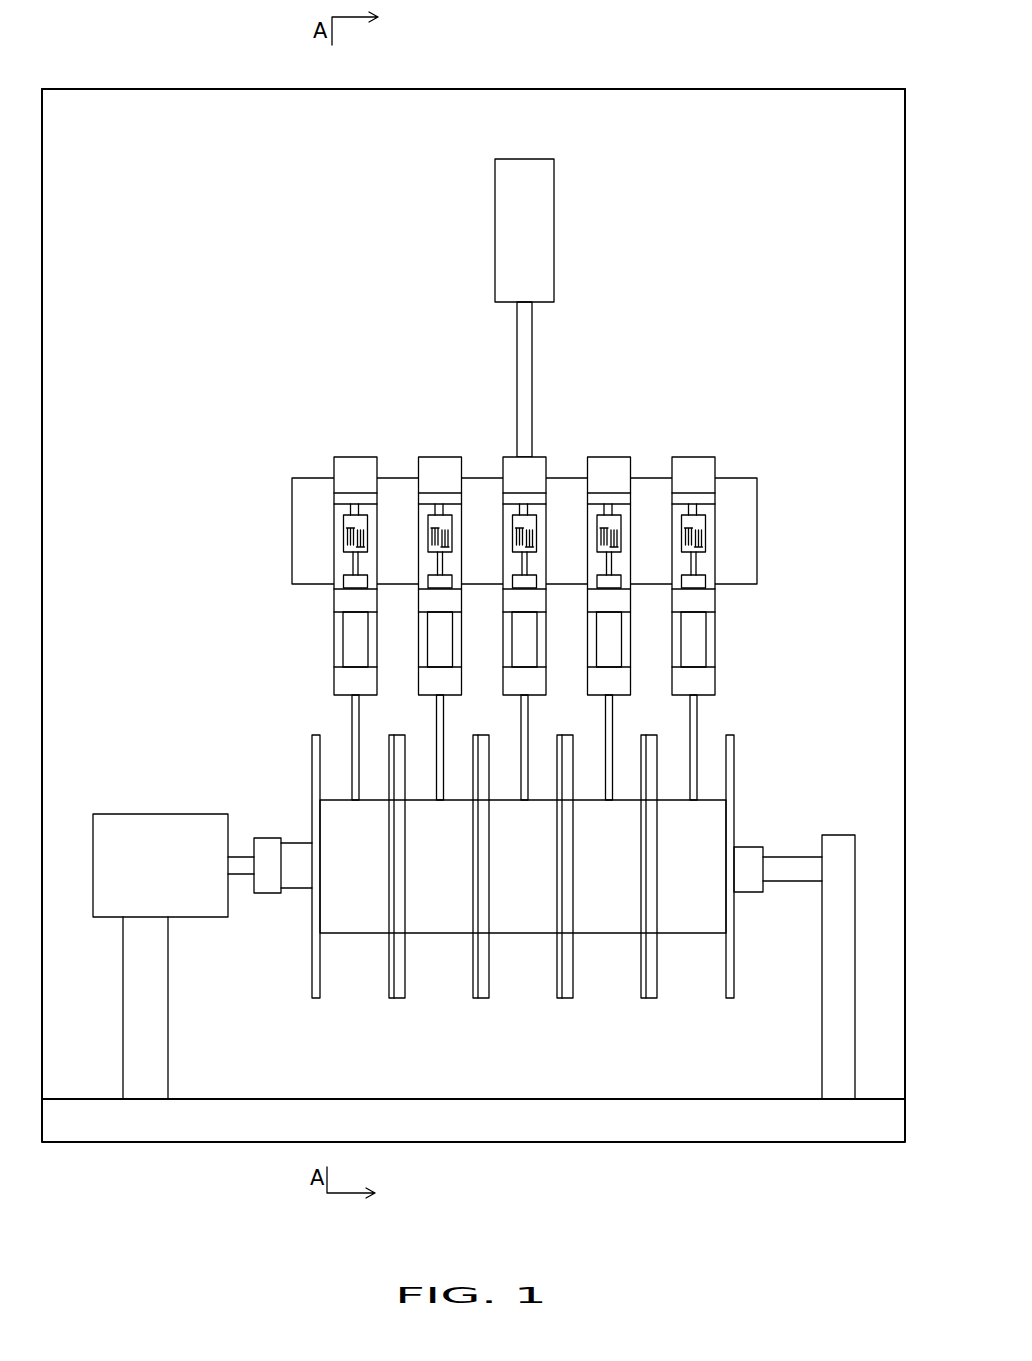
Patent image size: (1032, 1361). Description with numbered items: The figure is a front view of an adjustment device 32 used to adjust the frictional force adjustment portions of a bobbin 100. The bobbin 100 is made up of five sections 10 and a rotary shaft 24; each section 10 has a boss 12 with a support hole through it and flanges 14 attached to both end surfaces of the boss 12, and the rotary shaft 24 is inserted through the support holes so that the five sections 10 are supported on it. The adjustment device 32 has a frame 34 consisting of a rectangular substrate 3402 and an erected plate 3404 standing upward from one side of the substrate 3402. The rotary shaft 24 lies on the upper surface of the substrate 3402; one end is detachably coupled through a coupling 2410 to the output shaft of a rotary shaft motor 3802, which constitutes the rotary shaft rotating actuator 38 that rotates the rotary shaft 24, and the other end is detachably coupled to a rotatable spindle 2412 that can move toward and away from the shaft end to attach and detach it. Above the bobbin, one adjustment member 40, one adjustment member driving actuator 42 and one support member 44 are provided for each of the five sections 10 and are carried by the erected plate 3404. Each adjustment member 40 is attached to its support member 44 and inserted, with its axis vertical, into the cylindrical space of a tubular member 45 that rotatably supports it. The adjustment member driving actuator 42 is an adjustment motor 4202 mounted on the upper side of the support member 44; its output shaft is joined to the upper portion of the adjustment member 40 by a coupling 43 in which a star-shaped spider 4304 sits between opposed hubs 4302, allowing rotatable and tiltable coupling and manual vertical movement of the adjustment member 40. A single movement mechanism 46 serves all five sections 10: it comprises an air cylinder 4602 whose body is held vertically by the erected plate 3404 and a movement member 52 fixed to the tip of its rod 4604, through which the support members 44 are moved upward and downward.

The section 10 is at (362, 1003).
The boss 12 is at (355, 935).
The flange 14 is at (323, 985).
The rotary shaft 24 is at (747, 847).
The coupling 2410 is at (270, 838).
The spindle 2412 is at (793, 855).
The adjustment device 32 is at (455, 63).
The frame 34 is at (218, 88).
The substrate 3402 is at (557, 1144).
The erected plate 3404 is at (722, 137).
The rotary shaft rotating actuator 38 is at (173, 909).
The rotary shaft motor 3802 is at (148, 814).
The adjustment member 40 is at (352, 718).
The adjustment member driving actuator 42 is at (522, 524).
The adjustment motor 4202 is at (522, 524).
The coupling 43 is at (522, 543).
The hub 4302 is at (702, 523).
The spider 4304 is at (702, 535).
The support member 44 is at (335, 596).
The tubular member 45 is at (352, 640).
The movement mechanism 46 is at (536, 371).
The air cylinder 4602 is at (554, 222).
The rod 4604 is at (532, 352).
The movement member 52 is at (730, 480).
The bobbin 100 is at (557, 866).